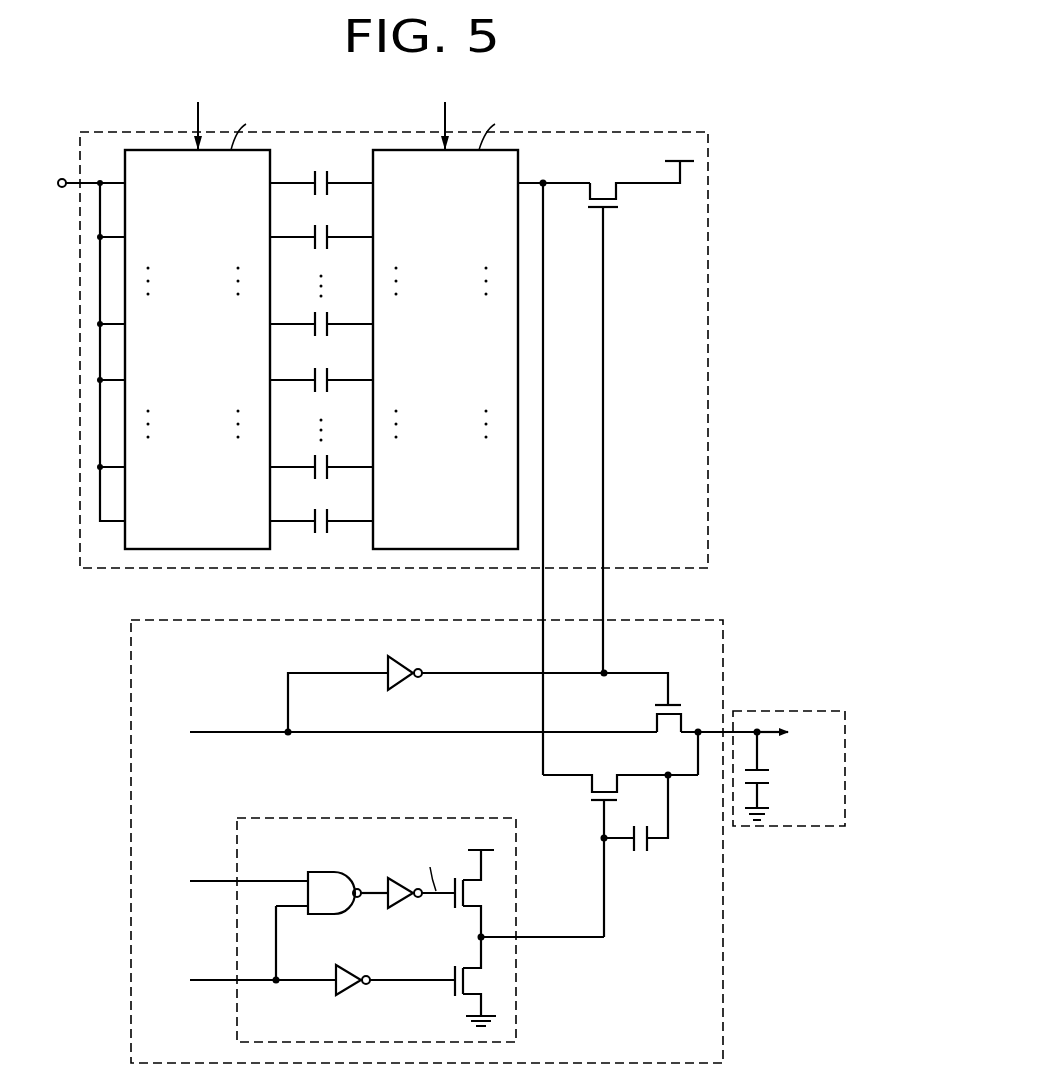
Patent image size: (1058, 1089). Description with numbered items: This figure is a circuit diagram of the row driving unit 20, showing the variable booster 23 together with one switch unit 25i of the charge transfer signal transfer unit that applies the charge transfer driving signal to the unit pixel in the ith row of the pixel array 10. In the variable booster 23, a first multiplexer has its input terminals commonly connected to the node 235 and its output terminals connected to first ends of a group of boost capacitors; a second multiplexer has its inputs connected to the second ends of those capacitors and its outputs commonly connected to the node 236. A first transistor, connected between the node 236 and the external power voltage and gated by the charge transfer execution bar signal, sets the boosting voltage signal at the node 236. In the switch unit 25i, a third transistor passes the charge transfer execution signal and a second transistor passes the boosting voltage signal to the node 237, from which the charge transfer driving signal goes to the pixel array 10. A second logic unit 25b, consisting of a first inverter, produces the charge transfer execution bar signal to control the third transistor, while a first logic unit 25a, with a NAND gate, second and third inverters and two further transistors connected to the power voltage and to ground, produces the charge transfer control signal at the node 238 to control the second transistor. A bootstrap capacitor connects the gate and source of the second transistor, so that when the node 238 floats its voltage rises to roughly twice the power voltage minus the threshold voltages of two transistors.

The row driving unit 20 is at (668, 87).
The variable booster 23 is at (565, 132).
The node 235 is at (62, 178).
The node 236 is at (546, 187).
The node 237 is at (698, 722).
The node 238 is at (573, 942).
The switch unit 25i is at (450, 620).
The second logic unit 25b is at (424, 661).
The first logic unit 25a is at (378, 818).
The pixel array 10 is at (790, 710).